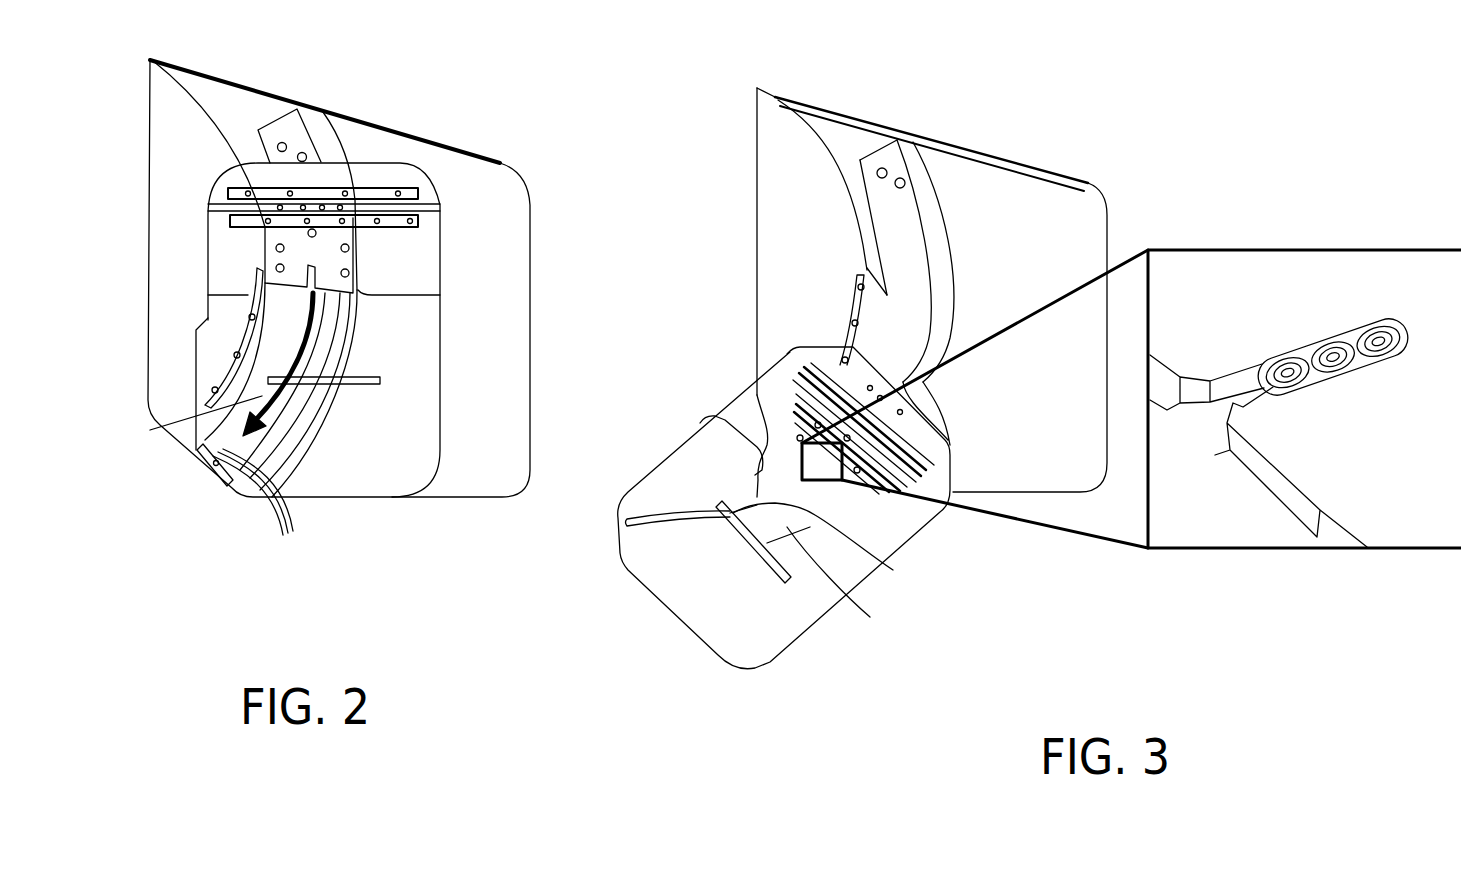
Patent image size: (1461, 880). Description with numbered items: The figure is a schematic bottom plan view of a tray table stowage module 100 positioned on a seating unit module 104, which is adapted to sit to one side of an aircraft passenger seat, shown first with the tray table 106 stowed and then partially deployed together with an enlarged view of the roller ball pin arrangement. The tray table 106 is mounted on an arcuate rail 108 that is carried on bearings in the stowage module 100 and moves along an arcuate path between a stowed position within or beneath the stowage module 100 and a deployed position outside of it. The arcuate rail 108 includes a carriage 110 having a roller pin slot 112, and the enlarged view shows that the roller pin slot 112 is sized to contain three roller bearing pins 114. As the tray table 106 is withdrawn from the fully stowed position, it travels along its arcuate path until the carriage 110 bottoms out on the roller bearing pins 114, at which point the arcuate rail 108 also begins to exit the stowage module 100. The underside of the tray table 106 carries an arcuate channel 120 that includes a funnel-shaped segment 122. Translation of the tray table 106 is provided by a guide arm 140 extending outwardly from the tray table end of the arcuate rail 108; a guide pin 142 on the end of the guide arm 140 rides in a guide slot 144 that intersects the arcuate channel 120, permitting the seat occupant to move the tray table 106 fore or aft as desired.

In FIG. 2, the tray table stowage module 100 is at (470, 257).
In FIG. 3, the tray table stowage module 100 is at (738, 391).
In FIG. 2, the seating unit module 104 is at (498, 218).
In FIG. 3, the seating unit module 104 is at (993, 175).
In FIG. 2, the tray table 106 is at (420, 366).
In FIG. 3, the tray table 106 is at (788, 633).
In FIG. 2, the arcuate rail 108 is at (247, 375).
In FIG. 3, the arcuate rail 108 is at (897, 277).
In FIG. 2, the carriage 110 is at (290, 243).
In FIG. 3, the carriage 110 is at (917, 523).
In FIG. 2, the roller pin slot 112 is at (313, 265).
In FIG. 3, the roller pin slot 112 is at (1247, 378).
In FIG. 2, the roller bearing pins 114 is at (259, 506).
In FIG. 3, the roller bearing pins 114 is at (893, 570).
In FIG. 2, the arcuate channel 120 is at (233, 452).
In FIG. 3, the arcuate channel 120 is at (688, 515).
In FIG. 2, the funnel-shaped segment 122 is at (262, 296).
In FIG. 3, the funnel-shaped segment 122 is at (762, 466).
In FIG. 3, the guide arm 140 is at (870, 617).
In FIG. 3, the guide pin 142 is at (813, 503).
In FIG. 2, the guide slot 144 is at (345, 388).
In FIG. 3, the guide slot 144 is at (785, 580).